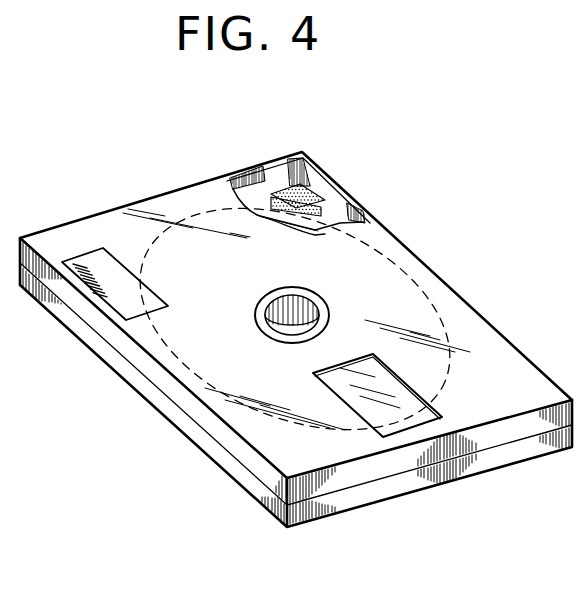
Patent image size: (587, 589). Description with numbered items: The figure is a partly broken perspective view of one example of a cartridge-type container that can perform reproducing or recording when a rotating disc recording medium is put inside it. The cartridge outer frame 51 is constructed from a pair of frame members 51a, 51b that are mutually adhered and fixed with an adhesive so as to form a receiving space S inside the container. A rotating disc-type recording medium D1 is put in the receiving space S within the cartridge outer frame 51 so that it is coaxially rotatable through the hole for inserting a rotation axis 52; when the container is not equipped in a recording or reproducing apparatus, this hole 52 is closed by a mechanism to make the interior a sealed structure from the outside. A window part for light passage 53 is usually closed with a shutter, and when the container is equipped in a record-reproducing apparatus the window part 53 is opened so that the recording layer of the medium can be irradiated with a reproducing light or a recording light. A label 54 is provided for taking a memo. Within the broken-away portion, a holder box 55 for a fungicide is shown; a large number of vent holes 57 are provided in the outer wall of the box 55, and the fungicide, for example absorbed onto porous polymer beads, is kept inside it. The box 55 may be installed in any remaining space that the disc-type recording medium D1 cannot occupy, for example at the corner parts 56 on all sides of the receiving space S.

The cartridge outer frame 51 is at (118, 212).
The frame member 51a is at (167, 415).
The frame member 51b is at (243, 452).
The hole for inserting a rotation axis 52 is at (293, 327).
The window part for light passage 53 is at (398, 404).
The label 54 is at (123, 305).
The holder box for a fungicide 55 is at (310, 192).
The corner parts 56 is at (50, 300).
The vent hole 57 is at (285, 188).
The receiving space S is at (336, 222).
The rotating disc-type recording medium D1 is at (448, 302).